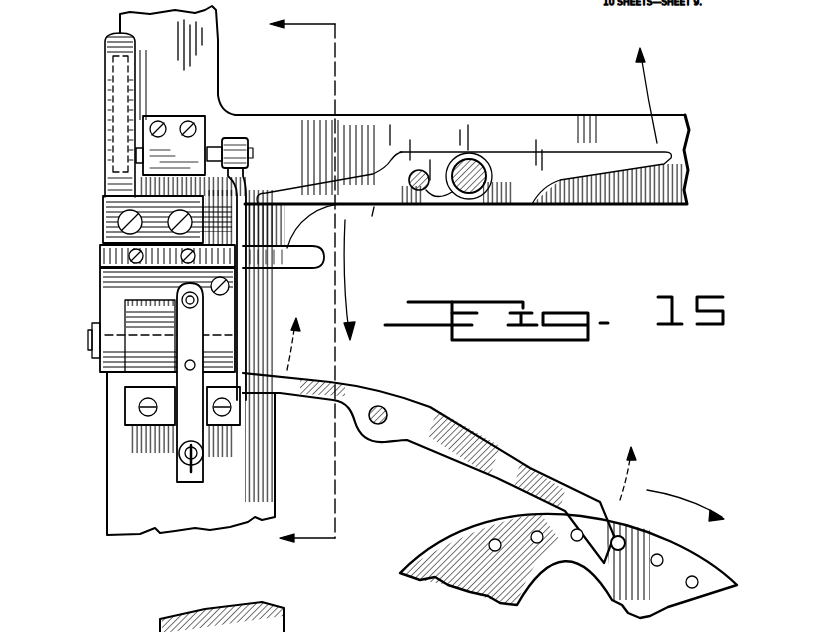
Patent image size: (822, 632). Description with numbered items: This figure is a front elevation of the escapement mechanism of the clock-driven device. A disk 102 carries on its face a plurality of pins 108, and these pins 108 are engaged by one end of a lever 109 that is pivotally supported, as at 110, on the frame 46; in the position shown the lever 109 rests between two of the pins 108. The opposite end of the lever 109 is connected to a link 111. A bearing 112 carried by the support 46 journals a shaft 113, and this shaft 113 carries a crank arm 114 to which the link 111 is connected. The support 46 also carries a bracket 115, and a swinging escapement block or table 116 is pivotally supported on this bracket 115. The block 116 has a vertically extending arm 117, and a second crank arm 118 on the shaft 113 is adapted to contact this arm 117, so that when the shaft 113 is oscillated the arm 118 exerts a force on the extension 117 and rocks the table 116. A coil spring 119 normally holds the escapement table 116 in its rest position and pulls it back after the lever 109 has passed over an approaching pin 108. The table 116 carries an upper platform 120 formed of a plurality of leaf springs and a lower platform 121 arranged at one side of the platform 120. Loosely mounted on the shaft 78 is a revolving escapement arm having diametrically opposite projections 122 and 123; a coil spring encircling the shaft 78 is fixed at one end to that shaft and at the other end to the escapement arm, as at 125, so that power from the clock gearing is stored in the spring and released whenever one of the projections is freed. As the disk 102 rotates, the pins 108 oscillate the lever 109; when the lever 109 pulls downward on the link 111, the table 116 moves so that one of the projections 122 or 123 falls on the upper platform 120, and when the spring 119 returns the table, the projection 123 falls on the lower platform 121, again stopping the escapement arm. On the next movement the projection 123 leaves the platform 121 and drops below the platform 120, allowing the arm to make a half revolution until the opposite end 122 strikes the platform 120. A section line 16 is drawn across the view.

The section line 16- 16 is at (284, 280).
The frame 46 is at (388, 117).
The shaft 78 is at (477, 157).
The disk 102 is at (683, 557).
The pins 108 is at (658, 557).
The lever 109 is at (500, 447).
The pivot 110 is at (388, 415).
The link 111 is at (210, 318).
The bearing 112 is at (173, 115).
The shaft 113 is at (215, 146).
The crank arm 114 is at (250, 143).
The bracket 115 is at (150, 355).
The swinging escapement block 116 is at (123, 280).
The vertically extending arm 117 is at (115, 83).
The crank arm 118 is at (113, 70).
The coil spring 119 is at (180, 463).
The upper platform 120 is at (270, 193).
The lower platform 121 is at (307, 258).
The projection 122 is at (635, 163).
The projection 123 is at (399, 220).
The spring connection 125 is at (420, 176).